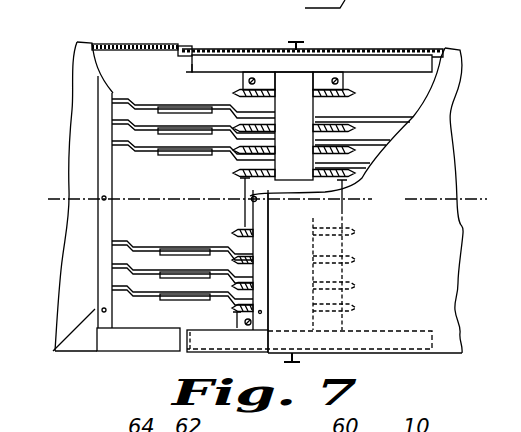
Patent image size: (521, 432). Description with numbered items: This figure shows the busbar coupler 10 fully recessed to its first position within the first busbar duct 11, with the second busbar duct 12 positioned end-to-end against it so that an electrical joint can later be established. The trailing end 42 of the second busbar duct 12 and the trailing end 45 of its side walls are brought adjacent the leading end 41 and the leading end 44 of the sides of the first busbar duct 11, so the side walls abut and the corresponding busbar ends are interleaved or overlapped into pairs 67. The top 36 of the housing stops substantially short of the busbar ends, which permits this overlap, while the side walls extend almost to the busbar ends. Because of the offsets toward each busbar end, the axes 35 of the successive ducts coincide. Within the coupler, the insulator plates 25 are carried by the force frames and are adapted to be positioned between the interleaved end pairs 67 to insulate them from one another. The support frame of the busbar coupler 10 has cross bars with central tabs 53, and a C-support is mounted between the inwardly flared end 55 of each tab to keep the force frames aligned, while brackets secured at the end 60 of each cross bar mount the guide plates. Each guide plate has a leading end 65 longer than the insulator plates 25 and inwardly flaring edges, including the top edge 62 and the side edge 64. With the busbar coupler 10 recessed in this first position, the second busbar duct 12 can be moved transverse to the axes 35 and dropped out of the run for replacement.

The busbar coupler 10 is at (403, 58).
The first busbar duct 11 is at (413, 379).
The second busbar duct 12 is at (80, 360).
The insulator plates 25 is at (343, 120).
The axes 35 is at (244, 189).
The top 36 is at (422, 305).
The leading end 41 is at (260, 228).
The trailing end 42 is at (53, 351).
The leading end of sides 44 is at (182, 351).
The trailing end of sides 45 is at (188, 330).
The tabs 53 is at (256, 192).
The inwardly flared end 55 is at (267, 196).
The end of cross bar 60 is at (316, 80).
The top edge 62 is at (190, 72).
The side edge 64 is at (180, 48).
The leading end of guide plate 65 is at (180, 68).
The interleaved busbar end pairs 67 is at (172, 246).